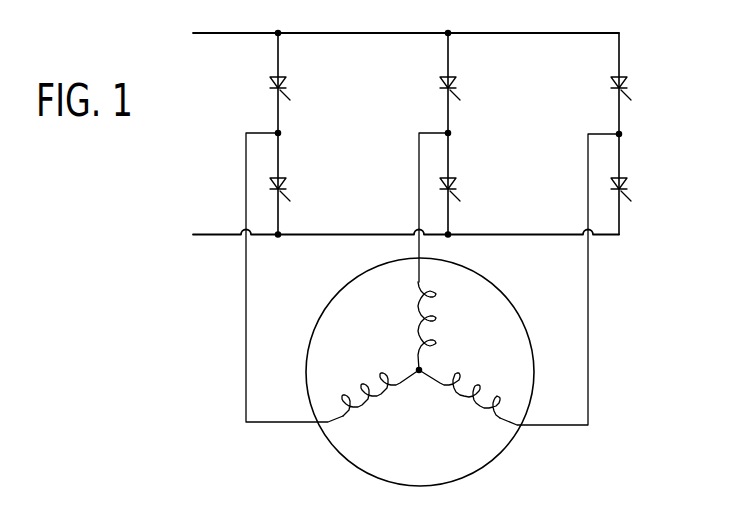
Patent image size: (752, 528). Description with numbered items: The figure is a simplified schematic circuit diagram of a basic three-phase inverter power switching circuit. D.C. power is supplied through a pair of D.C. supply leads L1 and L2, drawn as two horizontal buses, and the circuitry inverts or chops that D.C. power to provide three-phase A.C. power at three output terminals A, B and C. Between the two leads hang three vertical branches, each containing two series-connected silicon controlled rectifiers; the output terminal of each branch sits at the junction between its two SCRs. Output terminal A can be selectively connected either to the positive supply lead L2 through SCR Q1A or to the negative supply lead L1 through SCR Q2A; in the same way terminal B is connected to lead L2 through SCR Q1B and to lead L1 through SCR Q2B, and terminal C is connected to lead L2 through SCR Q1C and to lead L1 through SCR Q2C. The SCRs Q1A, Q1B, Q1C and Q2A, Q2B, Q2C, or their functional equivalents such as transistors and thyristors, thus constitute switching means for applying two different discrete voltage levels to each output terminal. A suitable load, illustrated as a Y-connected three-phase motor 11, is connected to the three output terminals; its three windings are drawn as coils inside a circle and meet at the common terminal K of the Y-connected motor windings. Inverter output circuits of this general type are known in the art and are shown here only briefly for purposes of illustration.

The negative D.C. supply lead L1 is at (232, 237).
The positive D.C. supply lead L2 is at (249, 32).
The SCR Q1A is at (285, 77).
The SCR Q2A is at (285, 178).
The SCR Q1B is at (455, 77).
The SCR Q2B is at (455, 178).
The SCR Q1C is at (626, 77).
The SCR Q2C is at (626, 178).
The output terminal A is at (276, 132).
The output terminal B is at (446, 132).
The output terminal C is at (617, 133).
The common terminal K is at (422, 369).
The Y-connected three-phase motor 11 is at (519, 434).